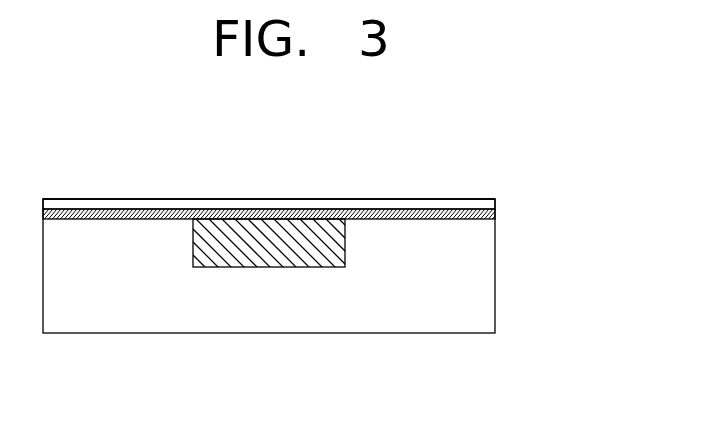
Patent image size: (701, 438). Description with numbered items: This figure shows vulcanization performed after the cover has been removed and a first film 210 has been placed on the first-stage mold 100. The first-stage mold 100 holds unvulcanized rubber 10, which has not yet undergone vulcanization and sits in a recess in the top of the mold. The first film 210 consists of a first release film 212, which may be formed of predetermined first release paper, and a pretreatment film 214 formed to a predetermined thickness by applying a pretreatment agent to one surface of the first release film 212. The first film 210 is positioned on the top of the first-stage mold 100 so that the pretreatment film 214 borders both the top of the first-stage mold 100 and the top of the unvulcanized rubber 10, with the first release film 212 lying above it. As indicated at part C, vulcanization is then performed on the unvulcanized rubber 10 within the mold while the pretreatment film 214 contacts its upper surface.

The first-stage mold 100 is at (500, 292).
The unvulcanized rubber 10 is at (300, 250).
The first film 210 is at (324, 176).
The first release film 212 is at (387, 203).
The pretreatment film 214 is at (459, 208).
The vulcanization step C is at (231, 272).